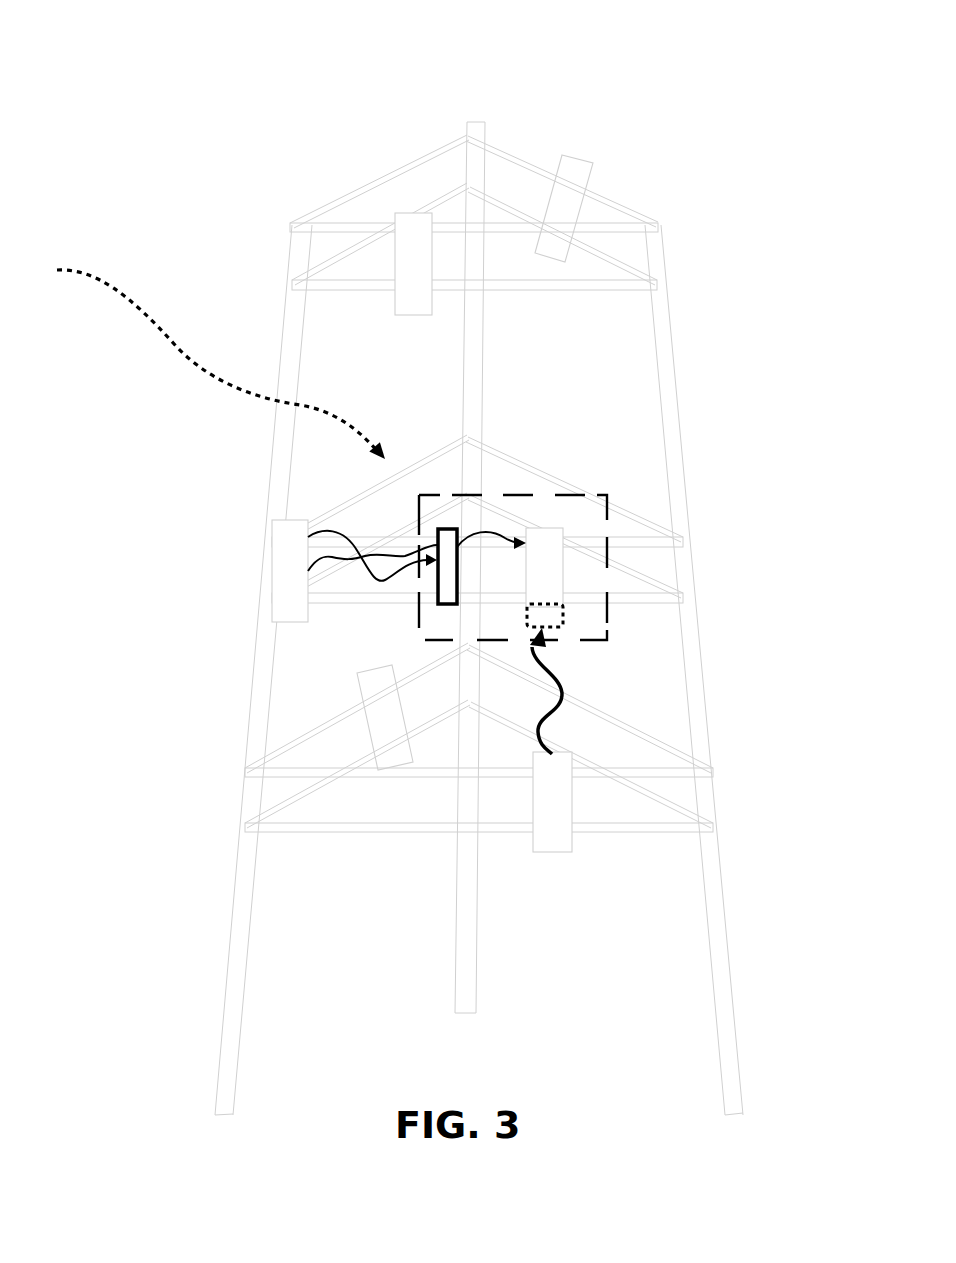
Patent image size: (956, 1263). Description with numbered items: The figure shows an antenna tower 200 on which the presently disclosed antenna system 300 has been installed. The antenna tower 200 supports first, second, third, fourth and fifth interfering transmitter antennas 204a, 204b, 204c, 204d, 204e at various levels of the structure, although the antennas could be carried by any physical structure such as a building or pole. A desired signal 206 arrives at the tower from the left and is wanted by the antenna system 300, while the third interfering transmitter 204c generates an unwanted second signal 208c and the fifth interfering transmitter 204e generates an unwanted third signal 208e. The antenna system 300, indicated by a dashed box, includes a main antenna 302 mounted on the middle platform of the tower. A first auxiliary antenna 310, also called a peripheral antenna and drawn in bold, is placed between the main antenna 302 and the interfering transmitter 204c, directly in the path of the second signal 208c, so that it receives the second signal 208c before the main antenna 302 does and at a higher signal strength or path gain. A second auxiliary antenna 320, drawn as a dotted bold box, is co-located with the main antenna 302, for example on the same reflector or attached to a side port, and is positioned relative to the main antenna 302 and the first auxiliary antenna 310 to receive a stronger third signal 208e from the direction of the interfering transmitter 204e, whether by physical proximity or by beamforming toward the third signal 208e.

The antenna tower 200 is at (791, 36).
The first interfering transmitter antenna 204a is at (580, 213).
The second interfering transmitter antenna 204b is at (395, 265).
The third interfering transmitter antenna 204c is at (272, 572).
The fourth interfering transmitter antenna 204d is at (368, 718).
The fifth interfering transmitter antenna 204e is at (533, 802).
The desired signal 206 is at (183, 351).
The second signal 208c is at (325, 557).
The third signal 208e is at (548, 713).
The antenna system 300 is at (607, 565).
The main antenna 302 is at (563, 577).
The first auxiliary antenna 310 is at (450, 528).
The second auxiliary antenna 320 is at (563, 613).